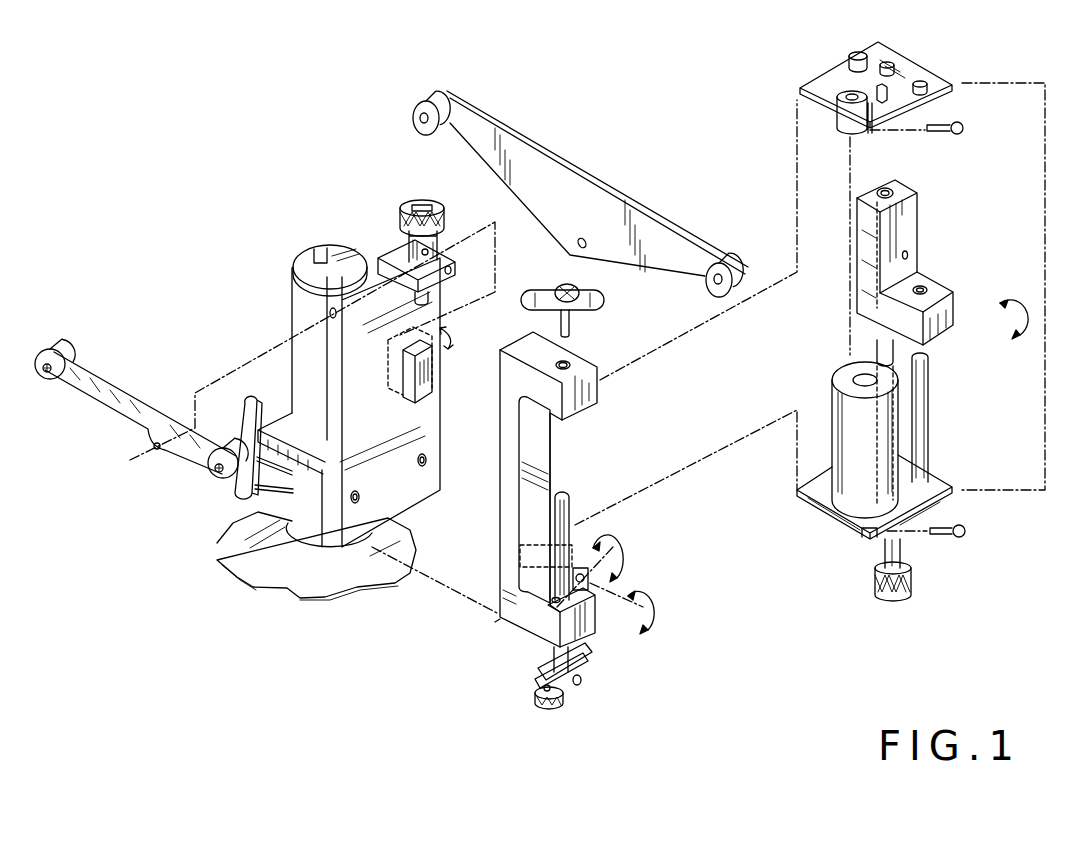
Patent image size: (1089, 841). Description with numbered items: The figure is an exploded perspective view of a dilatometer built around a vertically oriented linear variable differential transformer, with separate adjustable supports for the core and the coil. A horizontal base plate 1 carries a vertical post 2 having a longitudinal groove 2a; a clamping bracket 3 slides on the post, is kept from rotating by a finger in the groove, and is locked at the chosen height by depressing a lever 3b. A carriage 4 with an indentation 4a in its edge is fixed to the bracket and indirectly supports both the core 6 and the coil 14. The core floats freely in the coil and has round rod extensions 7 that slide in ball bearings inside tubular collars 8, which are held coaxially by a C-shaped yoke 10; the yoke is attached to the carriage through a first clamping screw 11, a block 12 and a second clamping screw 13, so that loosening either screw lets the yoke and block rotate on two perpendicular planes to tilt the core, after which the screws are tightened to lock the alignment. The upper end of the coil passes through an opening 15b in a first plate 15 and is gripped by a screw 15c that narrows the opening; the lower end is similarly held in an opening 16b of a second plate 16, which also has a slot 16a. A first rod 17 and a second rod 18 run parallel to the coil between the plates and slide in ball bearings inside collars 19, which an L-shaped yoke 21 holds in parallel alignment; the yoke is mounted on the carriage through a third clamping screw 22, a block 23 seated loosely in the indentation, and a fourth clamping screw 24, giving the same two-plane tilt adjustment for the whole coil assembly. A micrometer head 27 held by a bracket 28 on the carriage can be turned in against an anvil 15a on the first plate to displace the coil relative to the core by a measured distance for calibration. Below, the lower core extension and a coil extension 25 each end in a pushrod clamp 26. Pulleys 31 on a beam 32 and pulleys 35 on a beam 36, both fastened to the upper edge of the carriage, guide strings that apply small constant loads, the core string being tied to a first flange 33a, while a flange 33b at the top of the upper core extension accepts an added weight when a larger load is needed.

The base plate 1 is at (250, 557).
The vertical post 2 is at (302, 244).
The longitudinal groove 2a is at (337, 253).
The clamping bracket 3 is at (277, 415).
The lever 3b is at (233, 498).
The carriage 4 is at (406, 402).
The indentation 4a is at (435, 358).
The core 6 is at (560, 512).
The round rod extensions 7 is at (572, 328).
The tubular collar 8 is at (568, 360).
The C-shaped yoke 10 is at (540, 437).
The first clamping screw 11 is at (495, 624).
The block 12 is at (603, 521).
The second clamping screw 13 is at (590, 578).
The coil 14 is at (838, 410).
The first plate 15 is at (896, 102).
The anvil 15a is at (850, 62).
The opening 15b is at (843, 117).
The screw 15c is at (965, 132).
The second plate 16 is at (920, 523).
The slot 16a is at (850, 523).
The opening 16b is at (970, 532).
The first rod 17 is at (858, 320).
The second rod 18 is at (917, 417).
The tubular collar 19 is at (883, 187).
The L-shaped yoke 21 is at (899, 246).
The third clamping screw 22 is at (907, 252).
The block 23 is at (423, 390).
The fourth clamping screw 24 is at (444, 322).
The coil extension 25 is at (898, 542).
The pushrod clamp 26 is at (583, 680).
The micrometer head 27 is at (420, 200).
The bracket 28 is at (388, 255).
The pulleys 31 is at (72, 348).
The beam 32 is at (120, 417).
The first flange 33a is at (533, 700).
The flange 33b is at (532, 300).
The pulleys 35 is at (425, 100).
The beam 36 is at (556, 175).